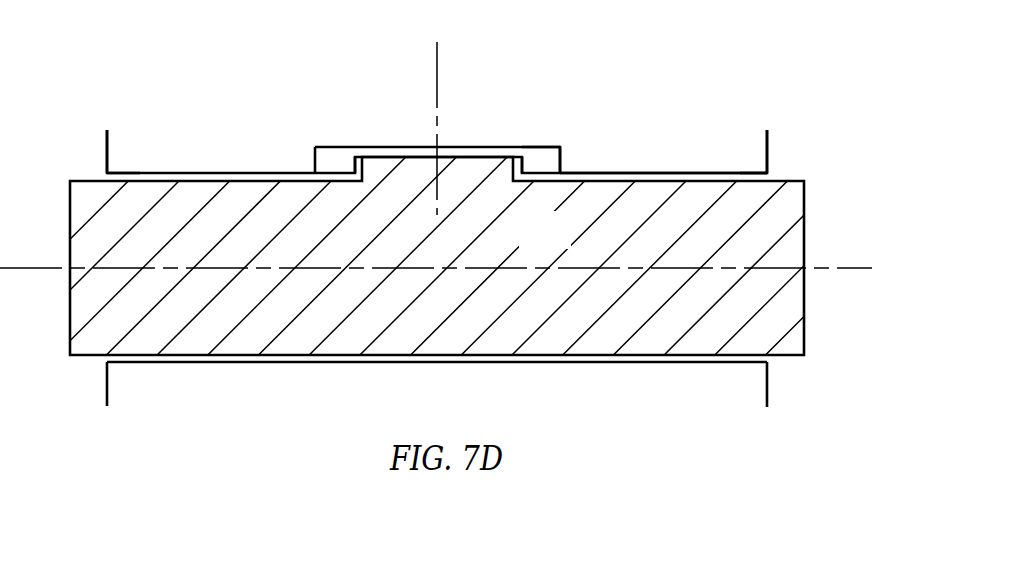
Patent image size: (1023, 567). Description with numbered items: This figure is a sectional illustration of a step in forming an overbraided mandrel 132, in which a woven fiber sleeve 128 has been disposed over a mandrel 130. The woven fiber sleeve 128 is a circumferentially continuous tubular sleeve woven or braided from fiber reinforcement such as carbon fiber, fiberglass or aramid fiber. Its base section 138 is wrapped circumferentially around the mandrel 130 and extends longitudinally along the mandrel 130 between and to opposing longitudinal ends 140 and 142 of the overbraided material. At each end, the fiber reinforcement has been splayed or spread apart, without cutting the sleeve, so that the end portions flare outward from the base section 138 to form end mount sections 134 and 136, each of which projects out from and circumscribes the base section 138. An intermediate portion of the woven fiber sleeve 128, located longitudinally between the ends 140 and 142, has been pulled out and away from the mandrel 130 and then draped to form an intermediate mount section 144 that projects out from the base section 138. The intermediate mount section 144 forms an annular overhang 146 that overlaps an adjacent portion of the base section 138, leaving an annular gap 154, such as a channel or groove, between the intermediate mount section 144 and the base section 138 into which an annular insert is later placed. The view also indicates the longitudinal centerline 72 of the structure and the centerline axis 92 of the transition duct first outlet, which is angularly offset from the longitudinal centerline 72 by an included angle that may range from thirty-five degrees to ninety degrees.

The longitudinal centerline 72 is at (867, 268).
The centerline axis 92 is at (437, 53).
The woven fiber sleeve 128 is at (671, 161).
The mandrel 130 is at (564, 243).
The overbraided mandrel 132 is at (855, 82).
The end mount section 134 is at (116, 150).
The end mount section 136 is at (775, 150).
The base section 138 is at (212, 166).
The longitudinal end 140 is at (107, 158).
The longitudinal end 142 is at (767, 160).
The intermediate mount section 144 is at (536, 143).
The annular overhang 146 is at (337, 146).
The annular gap 154 is at (328, 167).